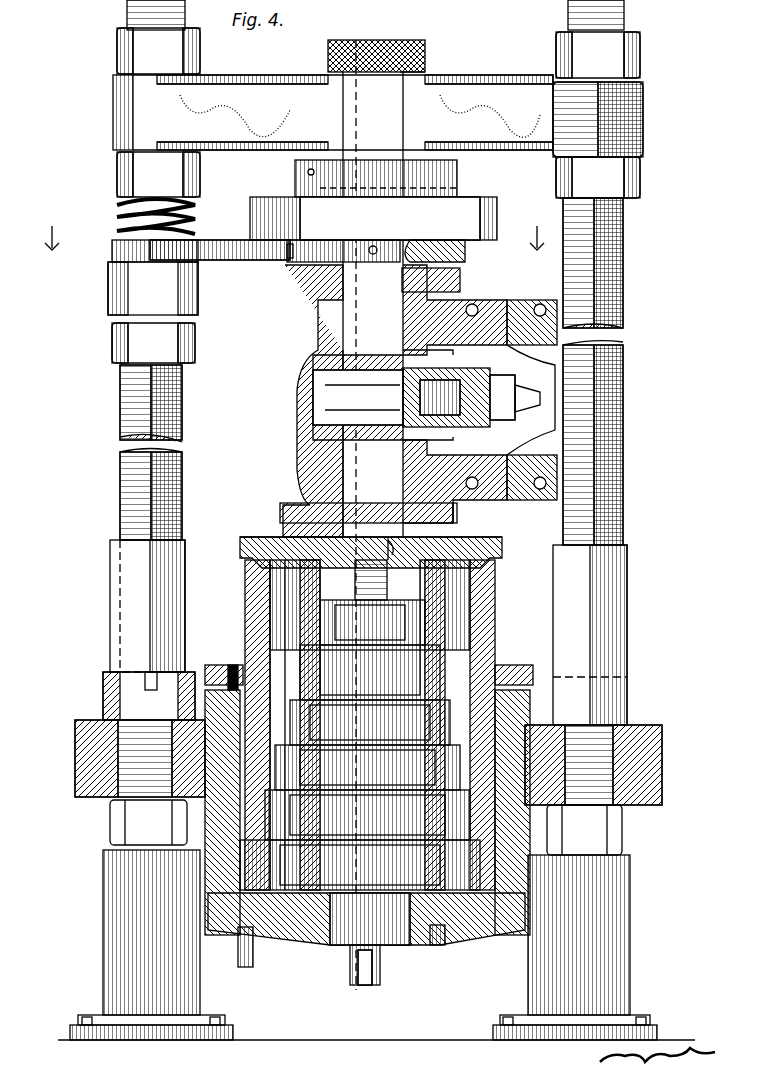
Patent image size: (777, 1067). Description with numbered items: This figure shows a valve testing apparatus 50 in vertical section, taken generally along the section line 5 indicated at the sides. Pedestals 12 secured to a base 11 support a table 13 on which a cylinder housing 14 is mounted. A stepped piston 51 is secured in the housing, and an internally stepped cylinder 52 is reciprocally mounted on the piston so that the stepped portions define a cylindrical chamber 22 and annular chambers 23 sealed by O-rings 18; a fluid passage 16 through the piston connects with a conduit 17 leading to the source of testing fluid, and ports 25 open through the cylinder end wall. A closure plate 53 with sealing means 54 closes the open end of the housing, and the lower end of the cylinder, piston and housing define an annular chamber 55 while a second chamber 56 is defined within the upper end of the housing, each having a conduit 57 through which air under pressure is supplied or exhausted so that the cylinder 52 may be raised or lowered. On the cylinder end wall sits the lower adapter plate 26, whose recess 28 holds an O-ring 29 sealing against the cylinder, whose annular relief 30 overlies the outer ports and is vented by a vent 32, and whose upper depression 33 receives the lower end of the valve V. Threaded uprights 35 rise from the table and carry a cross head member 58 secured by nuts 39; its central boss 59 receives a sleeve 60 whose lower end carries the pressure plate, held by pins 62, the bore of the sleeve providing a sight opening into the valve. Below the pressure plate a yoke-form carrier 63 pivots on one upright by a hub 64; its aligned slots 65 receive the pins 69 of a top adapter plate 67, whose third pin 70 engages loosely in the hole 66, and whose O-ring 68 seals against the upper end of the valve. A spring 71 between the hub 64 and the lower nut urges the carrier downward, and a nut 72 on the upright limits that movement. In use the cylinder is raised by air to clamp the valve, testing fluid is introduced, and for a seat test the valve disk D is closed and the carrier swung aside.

The base 11 is at (262, 1040).
The pedestals 12 is at (103, 910).
The table 13 is at (75, 748).
The cylinder housing 14 is at (490, 930).
The fluid passage 16 is at (358, 818).
The conduit 17 is at (380, 969).
The O-rings 18 is at (370, 722).
The cylindrical chamber 22 is at (370, 672).
The annular chambers 23 is at (438, 722).
The ports 25 is at (300, 610).
The adapter plate 26 is at (470, 537).
The recess 28 is at (395, 567).
The O-ring 29 is at (372, 622).
The annular relief 30 is at (268, 537).
The vent 32 is at (240, 548).
The depression 33 is at (373, 515).
The uprights 35 is at (120, 412).
The nuts 39 is at (117, 52).
The section line 5- 5 is at (293, 238).
The valve testing apparatus 50 is at (78, 604).
The stepped piston 51 is at (367, 767).
The cylinder 52 is at (485, 625).
The closure plate 53 is at (215, 665).
The sealing means 54 is at (500, 665).
The annular chamber 55 is at (260, 872).
The upper chamber 56 is at (232, 665).
The conduits 57 is at (253, 956).
The cross head member 58 is at (506, 75).
The central boss 59 is at (452, 75).
The sleeve 60 is at (418, 40).
The pins 62 is at (311, 172).
The carrier 63 is at (214, 245).
The hub 64 is at (120, 270).
The slots 65 is at (373, 248).
The hole 66 is at (292, 255).
The top adapter plate 67 is at (465, 255).
The O-ring 68 is at (460, 280).
The pins 69 is at (368, 246).
The third pin 70 is at (290, 244).
The spring 71 is at (117, 210).
The nut 72 is at (112, 343).
The valve disk D is at (448, 372).
The valve V is at (270, 385).